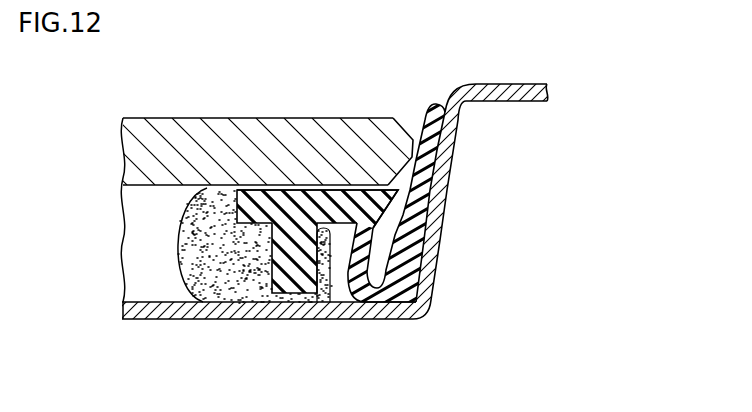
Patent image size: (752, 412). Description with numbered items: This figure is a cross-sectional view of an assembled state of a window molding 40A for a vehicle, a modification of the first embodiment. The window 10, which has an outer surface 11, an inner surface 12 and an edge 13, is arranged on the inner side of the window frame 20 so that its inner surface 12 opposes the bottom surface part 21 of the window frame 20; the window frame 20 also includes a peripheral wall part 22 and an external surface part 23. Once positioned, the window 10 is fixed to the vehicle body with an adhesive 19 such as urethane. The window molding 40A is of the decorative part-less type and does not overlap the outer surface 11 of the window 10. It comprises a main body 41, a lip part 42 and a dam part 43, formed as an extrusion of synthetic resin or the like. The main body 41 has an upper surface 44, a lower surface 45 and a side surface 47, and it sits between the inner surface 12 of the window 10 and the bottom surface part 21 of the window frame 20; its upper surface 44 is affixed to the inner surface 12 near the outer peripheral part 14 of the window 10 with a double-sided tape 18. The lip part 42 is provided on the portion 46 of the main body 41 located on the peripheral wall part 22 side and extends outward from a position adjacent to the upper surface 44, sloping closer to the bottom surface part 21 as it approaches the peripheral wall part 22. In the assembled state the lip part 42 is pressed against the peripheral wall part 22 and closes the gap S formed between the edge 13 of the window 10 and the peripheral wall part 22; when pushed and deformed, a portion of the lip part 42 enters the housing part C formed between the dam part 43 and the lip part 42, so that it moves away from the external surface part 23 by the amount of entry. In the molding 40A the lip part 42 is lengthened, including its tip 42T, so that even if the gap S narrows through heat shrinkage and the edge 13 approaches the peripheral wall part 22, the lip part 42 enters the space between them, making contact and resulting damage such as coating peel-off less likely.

The window 10 is at (268, 195).
The outer surface 11 is at (142, 118).
The inner surface 12 is at (142, 185).
The edge 13 is at (417, 186).
The outer peripheral part 14 is at (353, 187).
The double-sided tape 18 is at (317, 188).
The adhesive 19 is at (237, 262).
The window frame 20 is at (376, 209).
The bottom surface part 21 is at (153, 320).
The peripheral wall part 22 is at (438, 202).
The external surface part 23 is at (496, 96).
The window molding 40A is at (376, 236).
The main body 41 is at (358, 250).
The lip part 42 is at (472, 234).
The tip end of inclined wall 42T is at (452, 105).
The dam part 43 is at (301, 293).
The upper surface 44 is at (276, 189).
The lower surface 45 is at (308, 200).
The portion 46 is at (384, 200).
The side surface 47 is at (255, 290).
The gap S is at (402, 194).
The housing part C is at (335, 255).